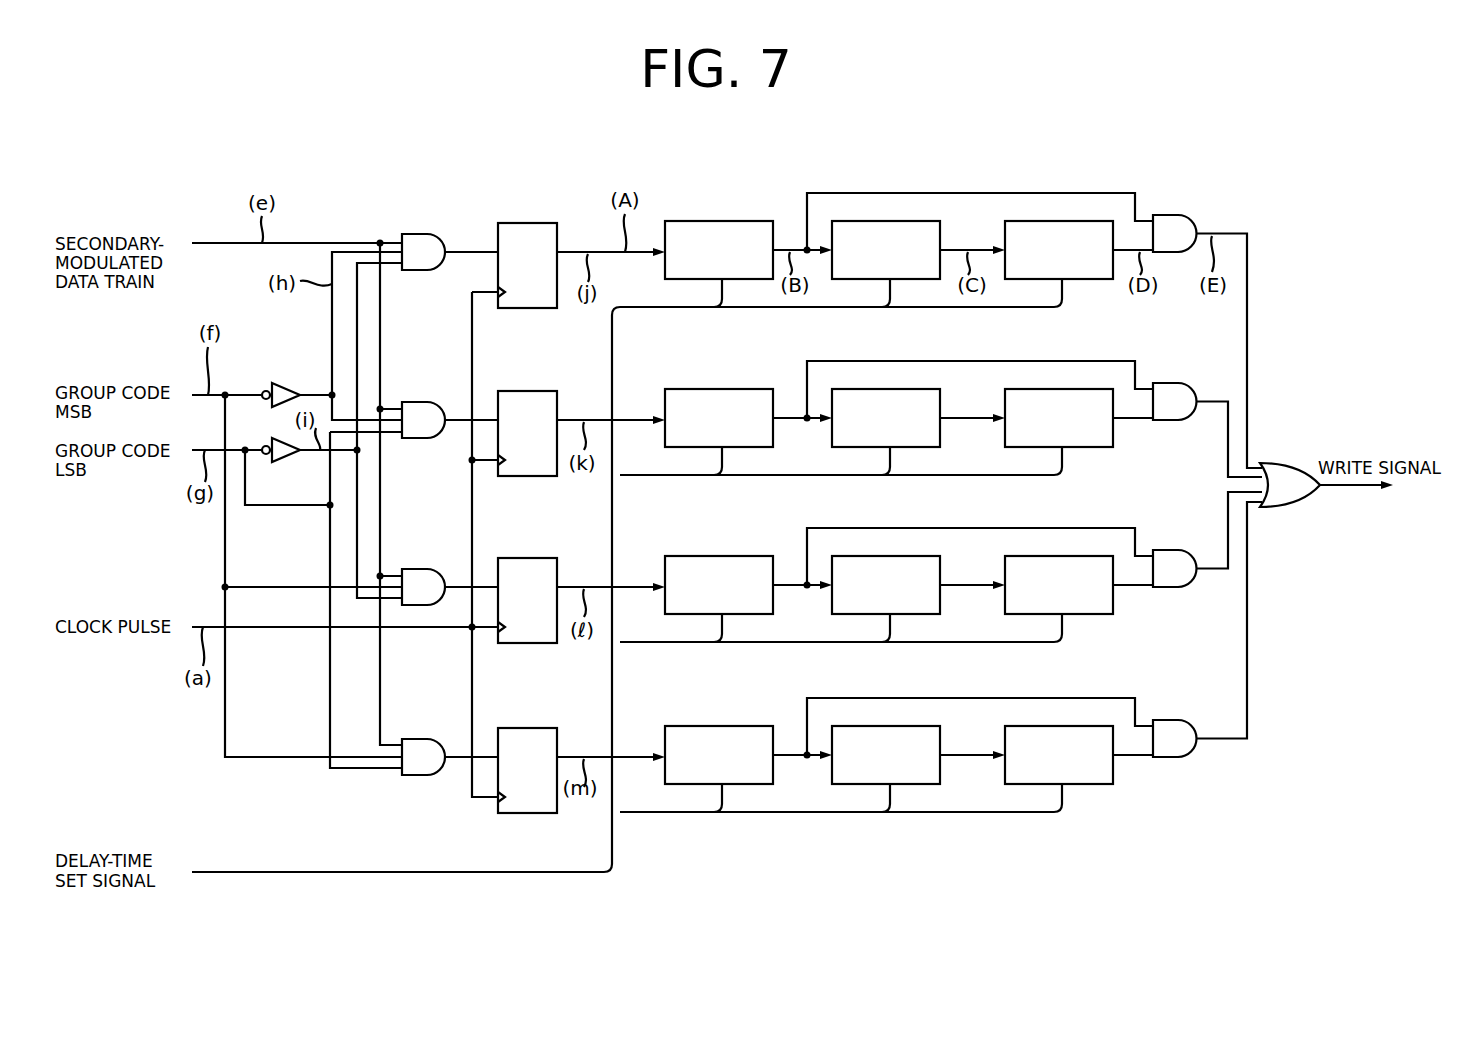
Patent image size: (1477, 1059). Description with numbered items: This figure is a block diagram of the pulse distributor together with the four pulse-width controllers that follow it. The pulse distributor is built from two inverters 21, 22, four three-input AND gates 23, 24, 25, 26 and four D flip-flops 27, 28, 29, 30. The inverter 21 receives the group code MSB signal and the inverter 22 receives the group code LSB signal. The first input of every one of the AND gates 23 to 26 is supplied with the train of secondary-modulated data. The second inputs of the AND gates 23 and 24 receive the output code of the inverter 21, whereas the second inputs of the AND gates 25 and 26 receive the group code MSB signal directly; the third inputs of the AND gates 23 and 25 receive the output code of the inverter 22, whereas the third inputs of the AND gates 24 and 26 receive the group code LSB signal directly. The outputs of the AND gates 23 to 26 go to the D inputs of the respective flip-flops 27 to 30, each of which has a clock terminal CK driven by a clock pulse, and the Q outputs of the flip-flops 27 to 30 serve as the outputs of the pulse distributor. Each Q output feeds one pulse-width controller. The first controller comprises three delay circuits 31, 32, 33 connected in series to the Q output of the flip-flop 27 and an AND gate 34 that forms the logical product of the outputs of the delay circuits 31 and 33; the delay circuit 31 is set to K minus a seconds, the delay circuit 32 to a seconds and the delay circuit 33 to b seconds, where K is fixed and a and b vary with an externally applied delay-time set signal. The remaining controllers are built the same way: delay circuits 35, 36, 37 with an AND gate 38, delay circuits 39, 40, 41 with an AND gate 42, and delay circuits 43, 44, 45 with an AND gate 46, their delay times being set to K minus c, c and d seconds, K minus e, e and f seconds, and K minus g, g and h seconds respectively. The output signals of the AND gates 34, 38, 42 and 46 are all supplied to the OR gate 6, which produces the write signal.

The OR gate 6 is at (1290, 463).
The inverter 21 is at (290, 383).
The inverter 22 is at (288, 462).
The 3-input AND gate 23 is at (425, 234).
The 3-input AND gate 24 is at (425, 402).
The 3-input AND gate 25 is at (425, 569).
The 3-input AND gate 26 is at (425, 739).
The D flip-flop 27 is at (540, 223).
The D flip-flop 28 is at (540, 391).
The D flip-flop 29 is at (535, 558).
The D flip-flop 30 is at (535, 728).
The delay circuit 31 is at (748, 221).
The delay circuit 32 is at (923, 221).
The delay circuit 33 is at (1087, 221).
The AND gate 34 is at (1192, 215).
The delay circuit 35 is at (748, 389).
The delay circuit 36 is at (923, 389).
The delay circuit 37 is at (1087, 389).
The AND gate 38 is at (1192, 383).
The delay circuit 39 is at (748, 556).
The delay circuit 40 is at (918, 556).
The delay circuit 41 is at (1083, 556).
The AND gate 42 is at (1181, 550).
The delay circuit 43 is at (748, 726).
The delay circuit 44 is at (916, 726).
The delay circuit 45 is at (1083, 726).
The AND gate 46 is at (1184, 720).